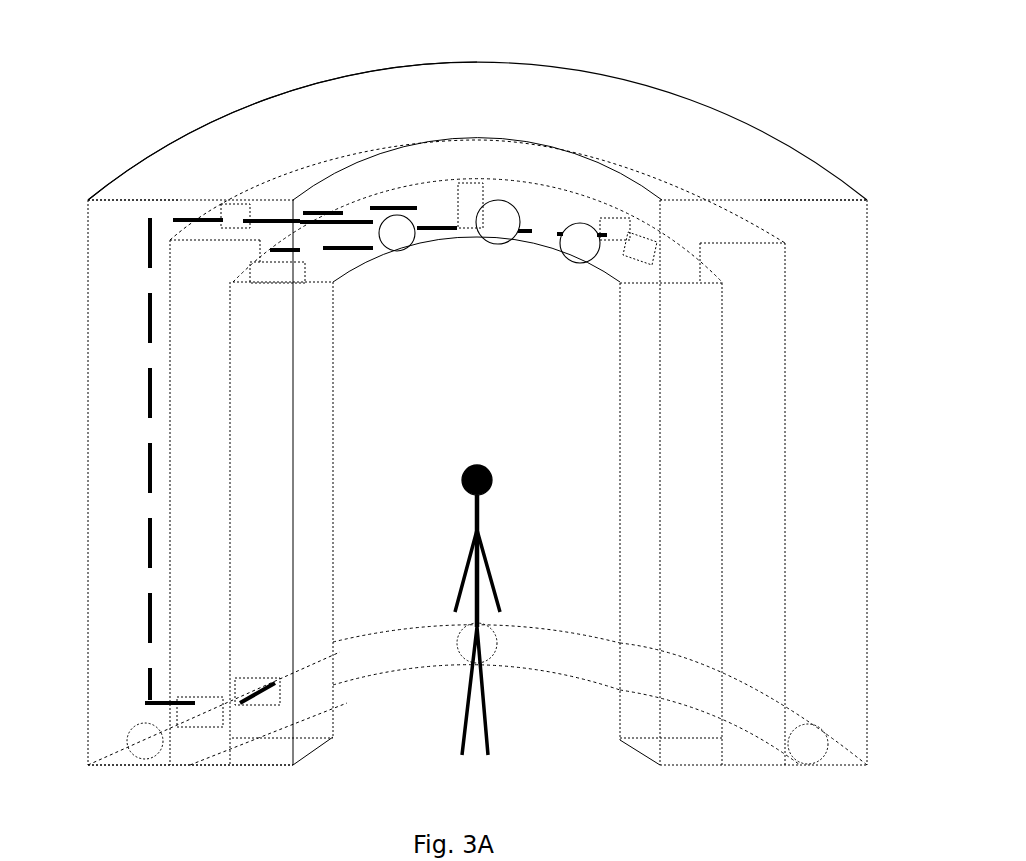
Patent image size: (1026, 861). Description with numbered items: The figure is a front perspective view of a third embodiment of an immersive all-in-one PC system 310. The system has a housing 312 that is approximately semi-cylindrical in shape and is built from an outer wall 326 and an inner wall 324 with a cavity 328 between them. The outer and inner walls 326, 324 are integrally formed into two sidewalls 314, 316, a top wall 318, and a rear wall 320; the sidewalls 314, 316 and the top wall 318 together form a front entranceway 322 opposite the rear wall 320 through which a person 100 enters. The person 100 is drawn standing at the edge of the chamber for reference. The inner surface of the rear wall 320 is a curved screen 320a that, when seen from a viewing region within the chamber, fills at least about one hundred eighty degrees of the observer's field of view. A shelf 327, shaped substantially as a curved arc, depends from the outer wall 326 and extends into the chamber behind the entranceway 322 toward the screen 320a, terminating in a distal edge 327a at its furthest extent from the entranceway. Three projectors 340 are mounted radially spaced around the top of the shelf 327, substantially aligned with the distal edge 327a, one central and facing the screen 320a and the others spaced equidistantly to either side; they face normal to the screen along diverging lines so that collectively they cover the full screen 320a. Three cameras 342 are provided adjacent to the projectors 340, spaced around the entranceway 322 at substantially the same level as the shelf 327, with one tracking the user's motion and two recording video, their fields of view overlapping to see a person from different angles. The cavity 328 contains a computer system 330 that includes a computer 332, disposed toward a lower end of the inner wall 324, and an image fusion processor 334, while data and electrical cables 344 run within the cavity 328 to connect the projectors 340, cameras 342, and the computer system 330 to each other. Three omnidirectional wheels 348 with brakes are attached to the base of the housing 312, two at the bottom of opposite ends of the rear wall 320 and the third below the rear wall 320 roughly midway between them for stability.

The person 100 is at (488, 557).
The immersive all-in-one PC system 310 is at (130, 128).
The housing 312 is at (782, 193).
The sidewall 314 is at (112, 392).
The sidewall 316 is at (825, 415).
The top wall 318 is at (621, 117).
The rear wall 320 is at (545, 58).
The curved screen 320a is at (390, 580).
The front entranceway 322 is at (560, 753).
The inner wall 324 is at (278, 177).
The outer wall 326 is at (103, 192).
The shelf 327 is at (340, 266).
The distal edge 327a is at (690, 262).
The cavity 328 is at (210, 277).
The computer system 330 is at (293, 785).
The computer 332 is at (273, 690).
The image fusion processor 334 is at (237, 213).
The projectors 340 is at (630, 227).
The cameras 342 is at (577, 247).
The data and electrical cables 344 is at (147, 473).
The omnidirectional wheels 348 is at (145, 750).